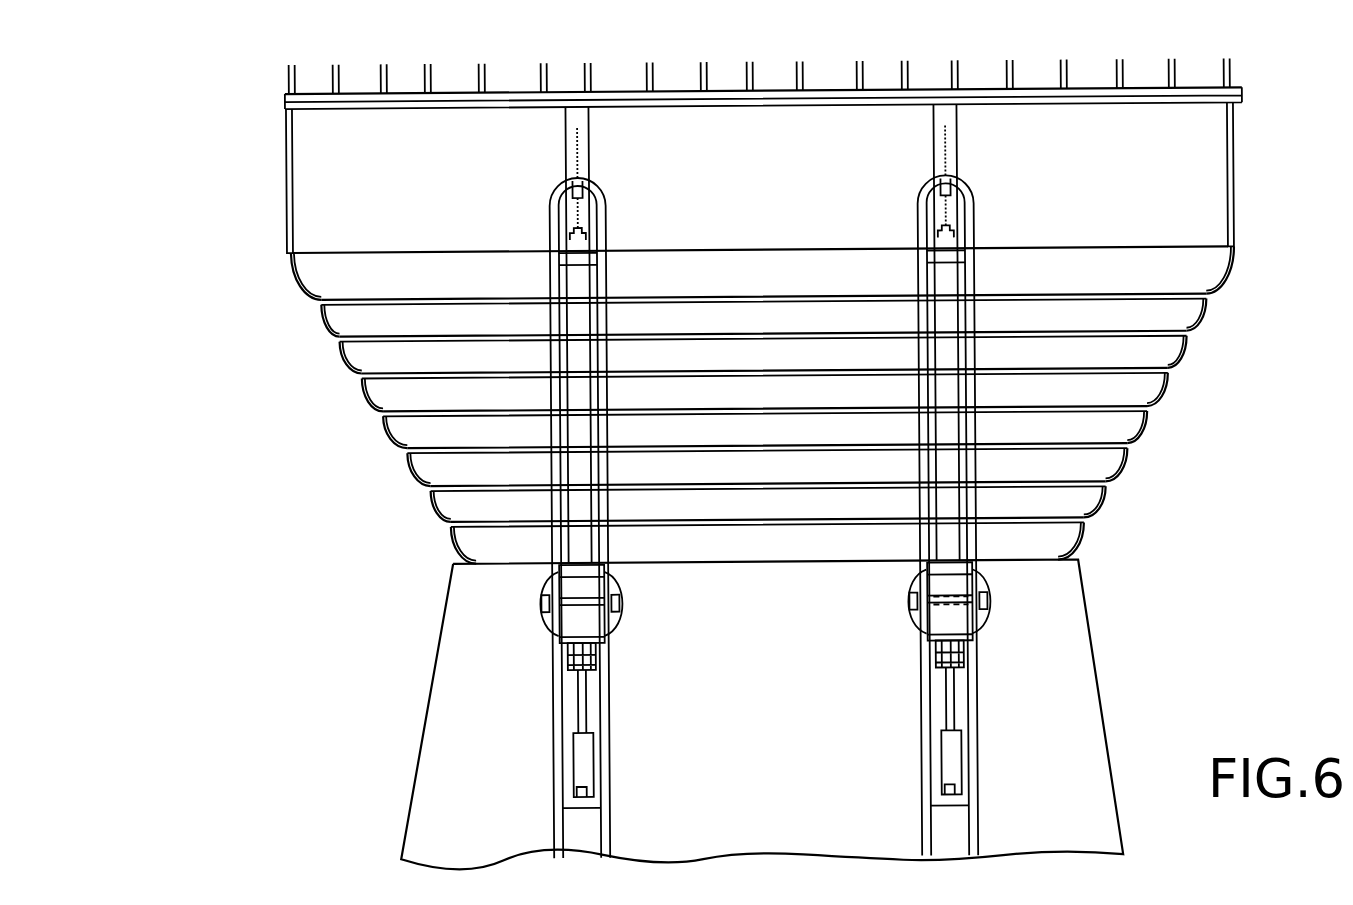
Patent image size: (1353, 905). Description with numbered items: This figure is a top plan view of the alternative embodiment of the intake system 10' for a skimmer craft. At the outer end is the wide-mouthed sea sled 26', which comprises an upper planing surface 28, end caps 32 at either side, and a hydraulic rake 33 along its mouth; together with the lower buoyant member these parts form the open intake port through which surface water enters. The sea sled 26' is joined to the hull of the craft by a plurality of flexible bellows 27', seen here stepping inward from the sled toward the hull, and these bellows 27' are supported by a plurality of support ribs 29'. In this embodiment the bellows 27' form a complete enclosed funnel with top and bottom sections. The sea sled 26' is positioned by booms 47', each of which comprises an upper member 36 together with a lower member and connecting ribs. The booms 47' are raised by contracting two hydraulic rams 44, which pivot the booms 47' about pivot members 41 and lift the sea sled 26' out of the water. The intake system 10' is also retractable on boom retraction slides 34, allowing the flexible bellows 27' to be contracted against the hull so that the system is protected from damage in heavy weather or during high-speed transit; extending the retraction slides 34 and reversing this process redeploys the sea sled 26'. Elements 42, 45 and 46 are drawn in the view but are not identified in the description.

The intake system 10' is at (611, 691).
The sea sled 26' is at (691, 87).
The flexible bellows 27' is at (771, 405).
The upper planing surface 28 is at (773, 163).
The support ribs 29' is at (773, 410).
The end caps 32 is at (289, 188).
The hydraulic rake 33 is at (796, 96).
The boom retraction slides 34 is at (607, 826).
The upper member 36 is at (558, 425).
The pivot members 41 is at (617, 602).
The pulley block 42 is at (615, 622).
The hydraulic rams 44 is at (583, 757).
The connector 45 is at (600, 658).
The column 46 is at (588, 236).
The booms 47' is at (986, 515).